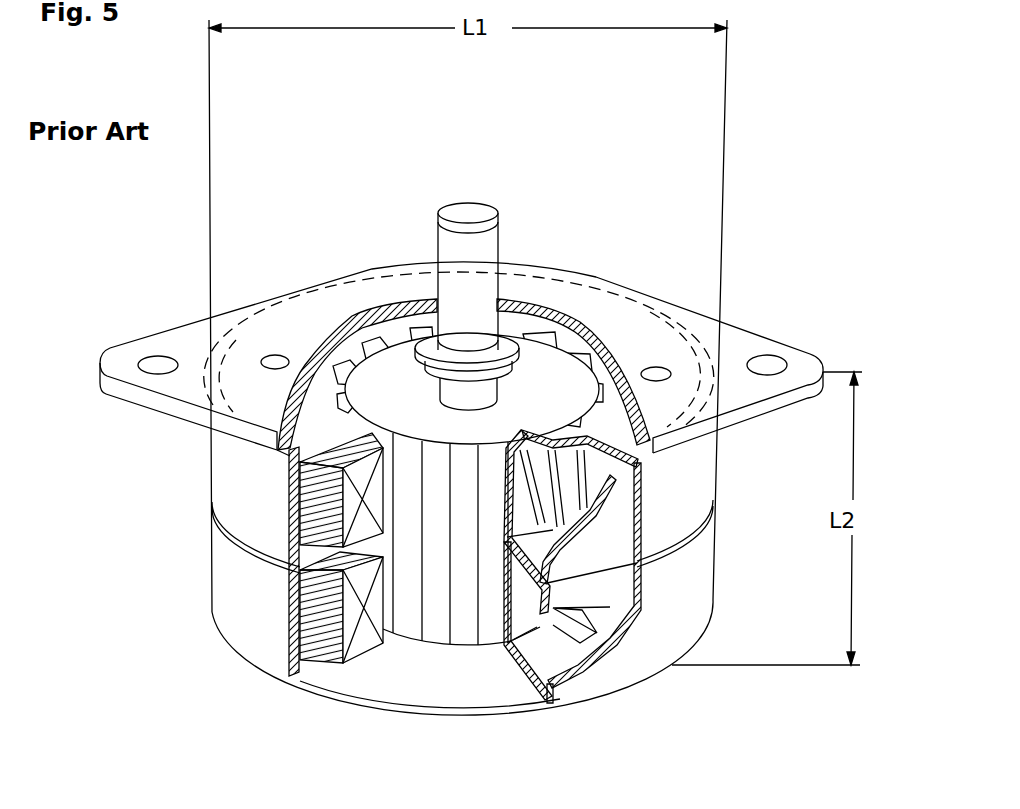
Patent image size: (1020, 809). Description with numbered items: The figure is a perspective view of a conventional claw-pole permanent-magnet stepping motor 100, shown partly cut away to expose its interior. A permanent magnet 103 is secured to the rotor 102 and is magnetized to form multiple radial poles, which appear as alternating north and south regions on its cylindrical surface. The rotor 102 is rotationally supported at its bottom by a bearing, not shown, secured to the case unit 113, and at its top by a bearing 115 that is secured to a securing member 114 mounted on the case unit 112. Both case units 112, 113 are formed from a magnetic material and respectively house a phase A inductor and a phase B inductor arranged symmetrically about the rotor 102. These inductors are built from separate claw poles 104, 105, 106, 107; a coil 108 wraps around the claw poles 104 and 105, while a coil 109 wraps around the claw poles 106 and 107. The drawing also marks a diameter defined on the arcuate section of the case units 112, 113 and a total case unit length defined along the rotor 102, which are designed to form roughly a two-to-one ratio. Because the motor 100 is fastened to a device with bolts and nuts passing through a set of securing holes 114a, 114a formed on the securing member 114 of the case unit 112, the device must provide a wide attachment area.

The claw-pole permanent-magnet stepping motor 100 is at (474, 456).
The rotor 102 is at (466, 253).
The permanent magnet 103 is at (402, 380).
The claw pole 104 is at (527, 513).
The claw pole 105 is at (513, 503).
The claw pole 106 is at (593, 590).
The claw pole 107 is at (543, 660).
The coil 108 is at (283, 573).
The coil 109 is at (338, 650).
The case unit 112 is at (212, 485).
The case unit 113 is at (222, 598).
The securing member 114 is at (474, 359).
The securing holes 114a is at (157, 356).
The bearing 115 is at (512, 335).